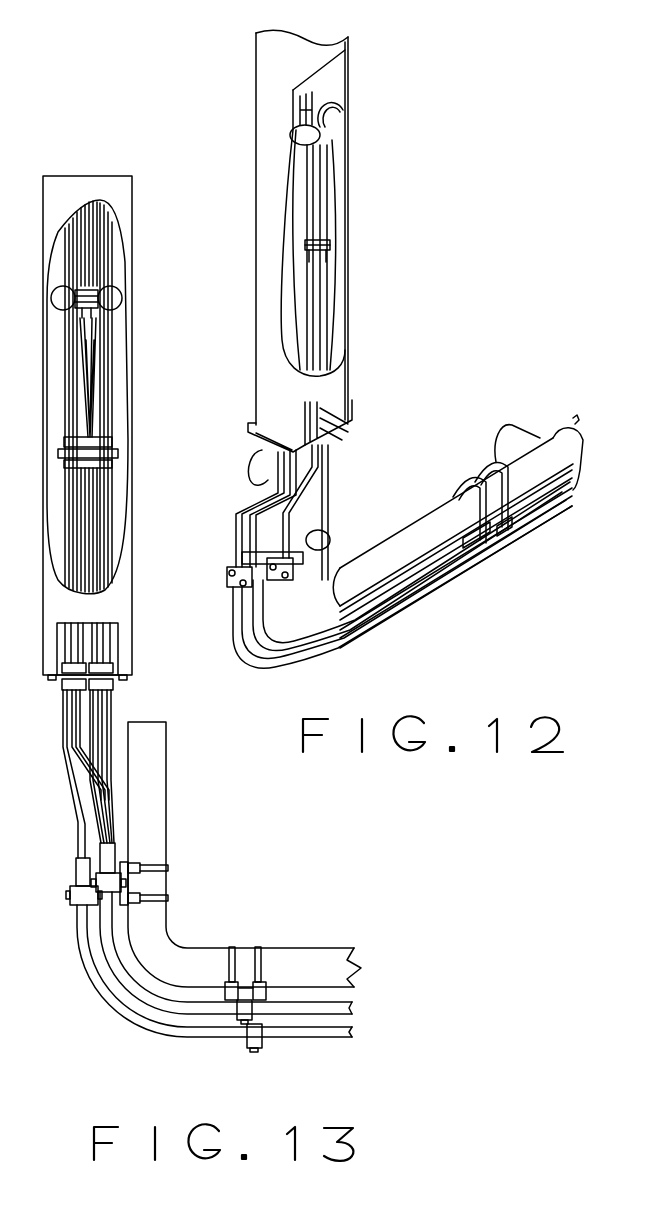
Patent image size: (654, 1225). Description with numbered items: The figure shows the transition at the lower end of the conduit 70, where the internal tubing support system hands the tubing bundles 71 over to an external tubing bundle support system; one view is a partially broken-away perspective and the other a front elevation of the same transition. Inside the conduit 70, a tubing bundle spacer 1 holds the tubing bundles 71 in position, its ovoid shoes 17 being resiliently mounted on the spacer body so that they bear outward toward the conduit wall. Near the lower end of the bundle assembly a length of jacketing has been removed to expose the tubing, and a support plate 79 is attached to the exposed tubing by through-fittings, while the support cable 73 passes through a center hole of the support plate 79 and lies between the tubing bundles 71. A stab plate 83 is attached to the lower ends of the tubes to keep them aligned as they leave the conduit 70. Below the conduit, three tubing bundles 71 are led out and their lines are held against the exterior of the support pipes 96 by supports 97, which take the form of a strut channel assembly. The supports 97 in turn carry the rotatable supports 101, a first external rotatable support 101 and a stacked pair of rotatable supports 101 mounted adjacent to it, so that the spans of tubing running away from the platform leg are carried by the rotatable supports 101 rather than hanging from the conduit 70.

In FIG. 13, the tubing bundle spacer 1 is at (88, 292).
In FIG. 12, the tubing bundle spacer 1 is at (335, 118).
In FIG. 13, the ovoid shoe 17 is at (113, 306).
In FIG. 13, the conduit 70 is at (120, 206).
In FIG. 12, the conduit 70 is at (270, 173).
In FIG. 13, the tubing bundle 71 is at (60, 240).
In FIG. 12, the tubing bundle 71 is at (432, 588).
In FIG. 13, the support cable 73 is at (85, 252).
In FIG. 13, the support plate 79 is at (112, 452).
In FIG. 12, the stab plate 83 is at (352, 420).
In FIG. 13, the support pipe 96 is at (72, 790).
In FIG. 12, the support pipe 96 is at (435, 527).
In FIG. 13, the support (strut channel assembly) 97 is at (128, 870).
In FIG. 12, the support (strut channel assembly) 97 is at (505, 536).
In FIG. 13, the rotatable support 101 is at (238, 1016).